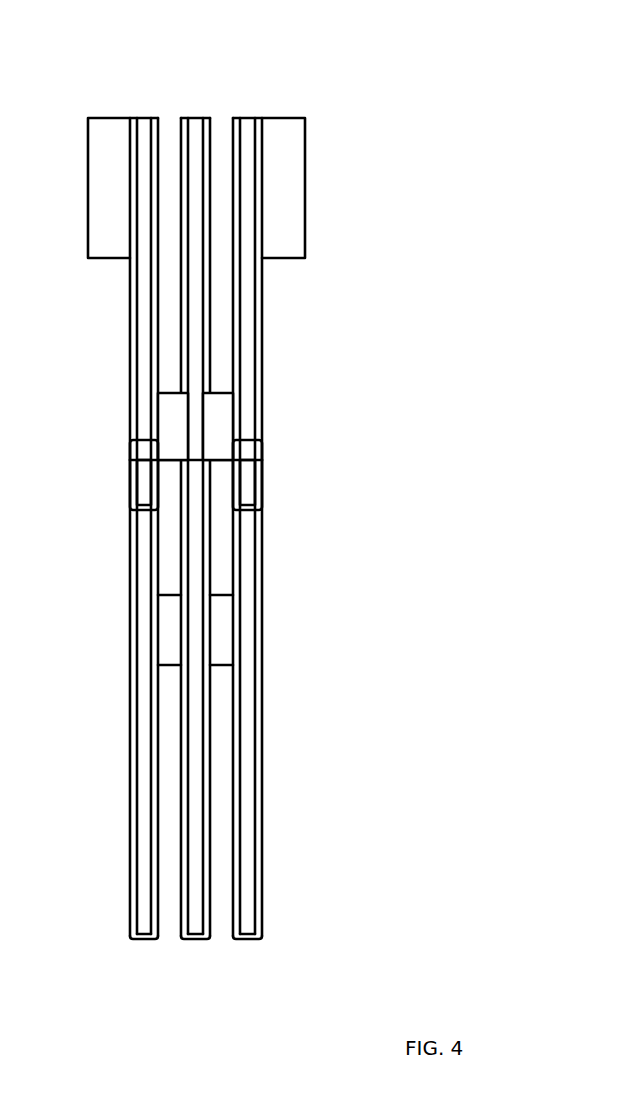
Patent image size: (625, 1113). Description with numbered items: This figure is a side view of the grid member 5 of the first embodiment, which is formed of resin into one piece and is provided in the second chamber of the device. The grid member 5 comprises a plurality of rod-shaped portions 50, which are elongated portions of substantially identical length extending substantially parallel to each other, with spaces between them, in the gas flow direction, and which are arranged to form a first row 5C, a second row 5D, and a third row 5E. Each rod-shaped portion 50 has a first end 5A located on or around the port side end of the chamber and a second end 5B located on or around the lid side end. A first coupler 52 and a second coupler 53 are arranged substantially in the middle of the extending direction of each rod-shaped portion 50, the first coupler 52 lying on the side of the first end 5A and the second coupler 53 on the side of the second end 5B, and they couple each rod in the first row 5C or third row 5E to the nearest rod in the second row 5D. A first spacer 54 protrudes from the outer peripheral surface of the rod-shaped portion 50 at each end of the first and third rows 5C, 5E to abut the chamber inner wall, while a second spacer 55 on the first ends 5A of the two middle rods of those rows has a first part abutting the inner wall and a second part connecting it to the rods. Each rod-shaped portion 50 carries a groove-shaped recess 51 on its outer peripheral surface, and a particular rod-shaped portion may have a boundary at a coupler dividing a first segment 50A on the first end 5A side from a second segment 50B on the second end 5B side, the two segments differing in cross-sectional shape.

The grid member 5 is at (377, 130).
The first end 5A is at (197, 87).
The second end 5B is at (273, 948).
The first row 5C is at (143, 963).
The second row 5D is at (195, 963).
The third row 5E is at (252, 963).
The rod-shaped portion 50 is at (113, 353).
The first segment 50A is at (272, 313).
The second segment 50B is at (272, 742).
The recess 51 is at (130, 307).
The first coupler 52 is at (172, 415).
The second coupler 53 is at (170, 630).
The first spacer 54 is at (145, 478).
The second spacer 55 is at (100, 177).